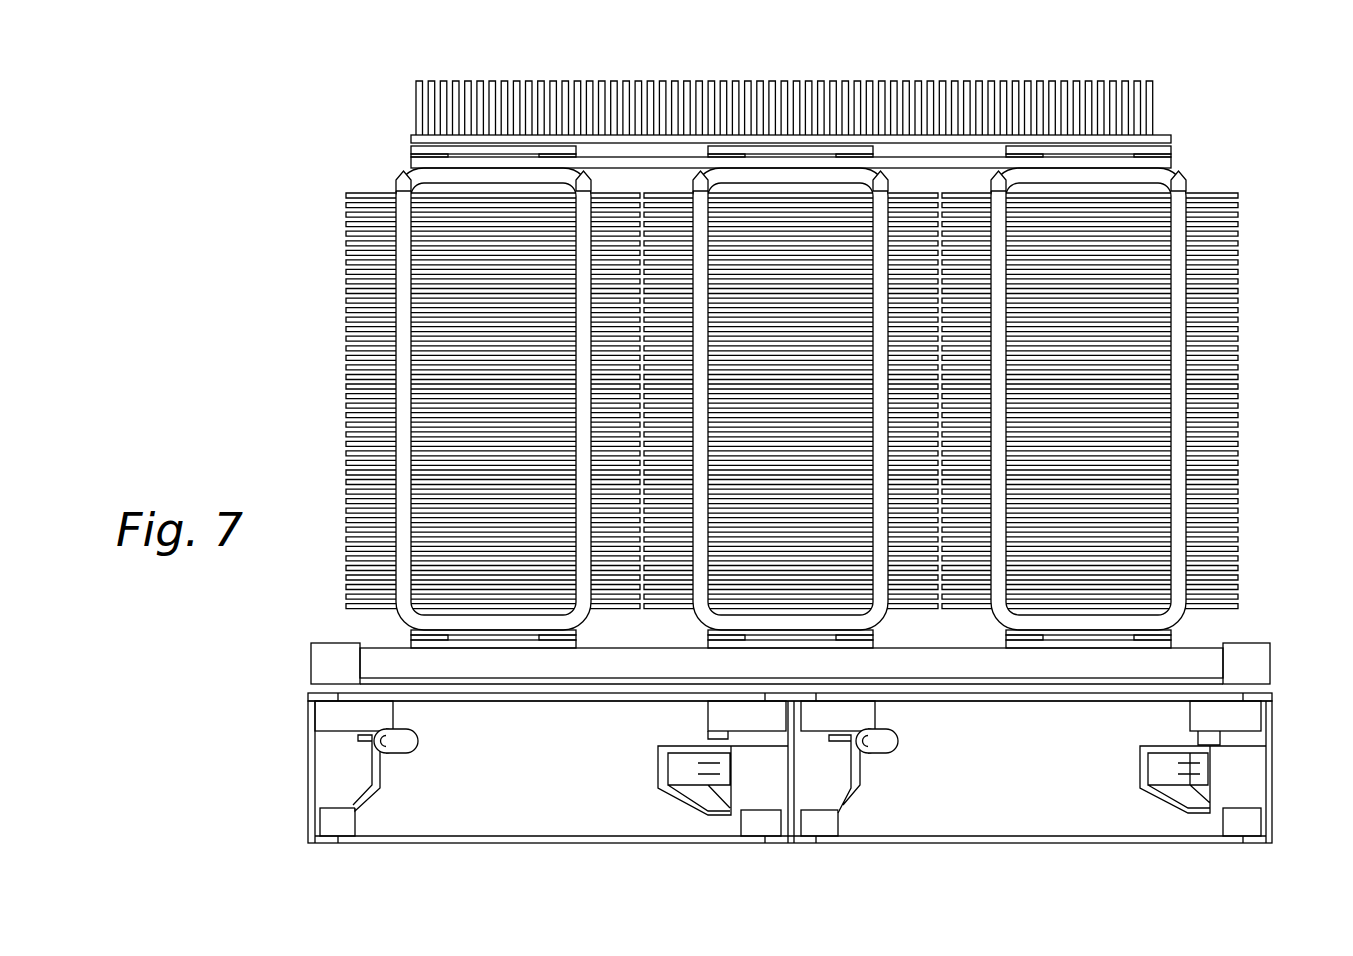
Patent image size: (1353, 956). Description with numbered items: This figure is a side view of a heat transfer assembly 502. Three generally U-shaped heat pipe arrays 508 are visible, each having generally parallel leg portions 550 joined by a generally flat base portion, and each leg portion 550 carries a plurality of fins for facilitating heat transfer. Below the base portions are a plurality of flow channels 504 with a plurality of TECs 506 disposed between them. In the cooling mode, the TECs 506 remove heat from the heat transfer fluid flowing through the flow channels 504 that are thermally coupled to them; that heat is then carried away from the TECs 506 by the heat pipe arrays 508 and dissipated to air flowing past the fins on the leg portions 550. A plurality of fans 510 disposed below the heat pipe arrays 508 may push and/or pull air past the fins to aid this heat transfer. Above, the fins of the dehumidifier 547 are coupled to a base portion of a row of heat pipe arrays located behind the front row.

The heat transfer assembly 502 is at (230, 127).
The flow channels 504 is at (388, 652).
The TECs 506 is at (1165, 140).
The heat pipe arrays 508 is at (338, 254).
The fans 510 is at (672, 757).
The dehumidifier 547 is at (1147, 86).
The leg portions 550 is at (572, 265).